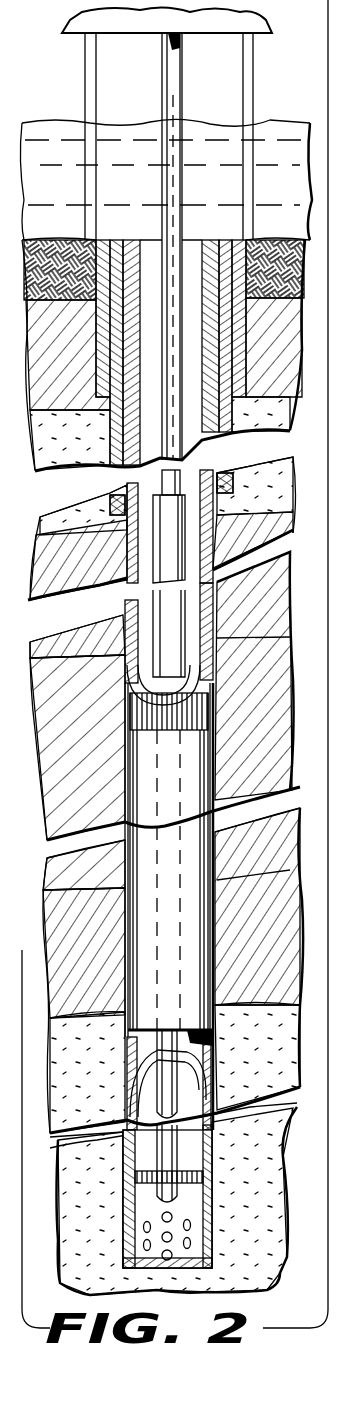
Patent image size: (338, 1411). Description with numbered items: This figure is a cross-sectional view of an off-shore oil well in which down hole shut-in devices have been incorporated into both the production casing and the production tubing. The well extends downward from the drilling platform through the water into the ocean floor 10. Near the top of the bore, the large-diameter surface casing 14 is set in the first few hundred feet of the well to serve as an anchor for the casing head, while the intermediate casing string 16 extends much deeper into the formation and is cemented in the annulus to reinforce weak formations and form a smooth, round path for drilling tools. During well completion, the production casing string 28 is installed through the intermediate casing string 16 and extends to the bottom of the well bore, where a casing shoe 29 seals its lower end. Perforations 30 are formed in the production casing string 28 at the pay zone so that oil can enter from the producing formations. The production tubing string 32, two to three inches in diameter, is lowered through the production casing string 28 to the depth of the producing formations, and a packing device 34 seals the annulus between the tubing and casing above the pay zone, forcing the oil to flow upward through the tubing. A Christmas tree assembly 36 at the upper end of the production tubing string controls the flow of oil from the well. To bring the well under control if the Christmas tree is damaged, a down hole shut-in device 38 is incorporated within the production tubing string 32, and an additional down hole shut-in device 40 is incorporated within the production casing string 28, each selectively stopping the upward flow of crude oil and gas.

The ocean floor 10 is at (48, 240).
The surface casing 14 is at (93, 342).
The intermediate casing string 16 is at (108, 436).
The production casing string 28 is at (125, 557).
The casing shoe 29 is at (140, 1272).
The perforations 30 is at (148, 1213).
The production tubing string 32 is at (167, 1098).
The packing device 34 is at (187, 1173).
The Christmas tree assembly 36 is at (191, 56).
The down hole shut-in device 38 is at (217, 613).
The additional down hole shut-in device 40 is at (207, 766).